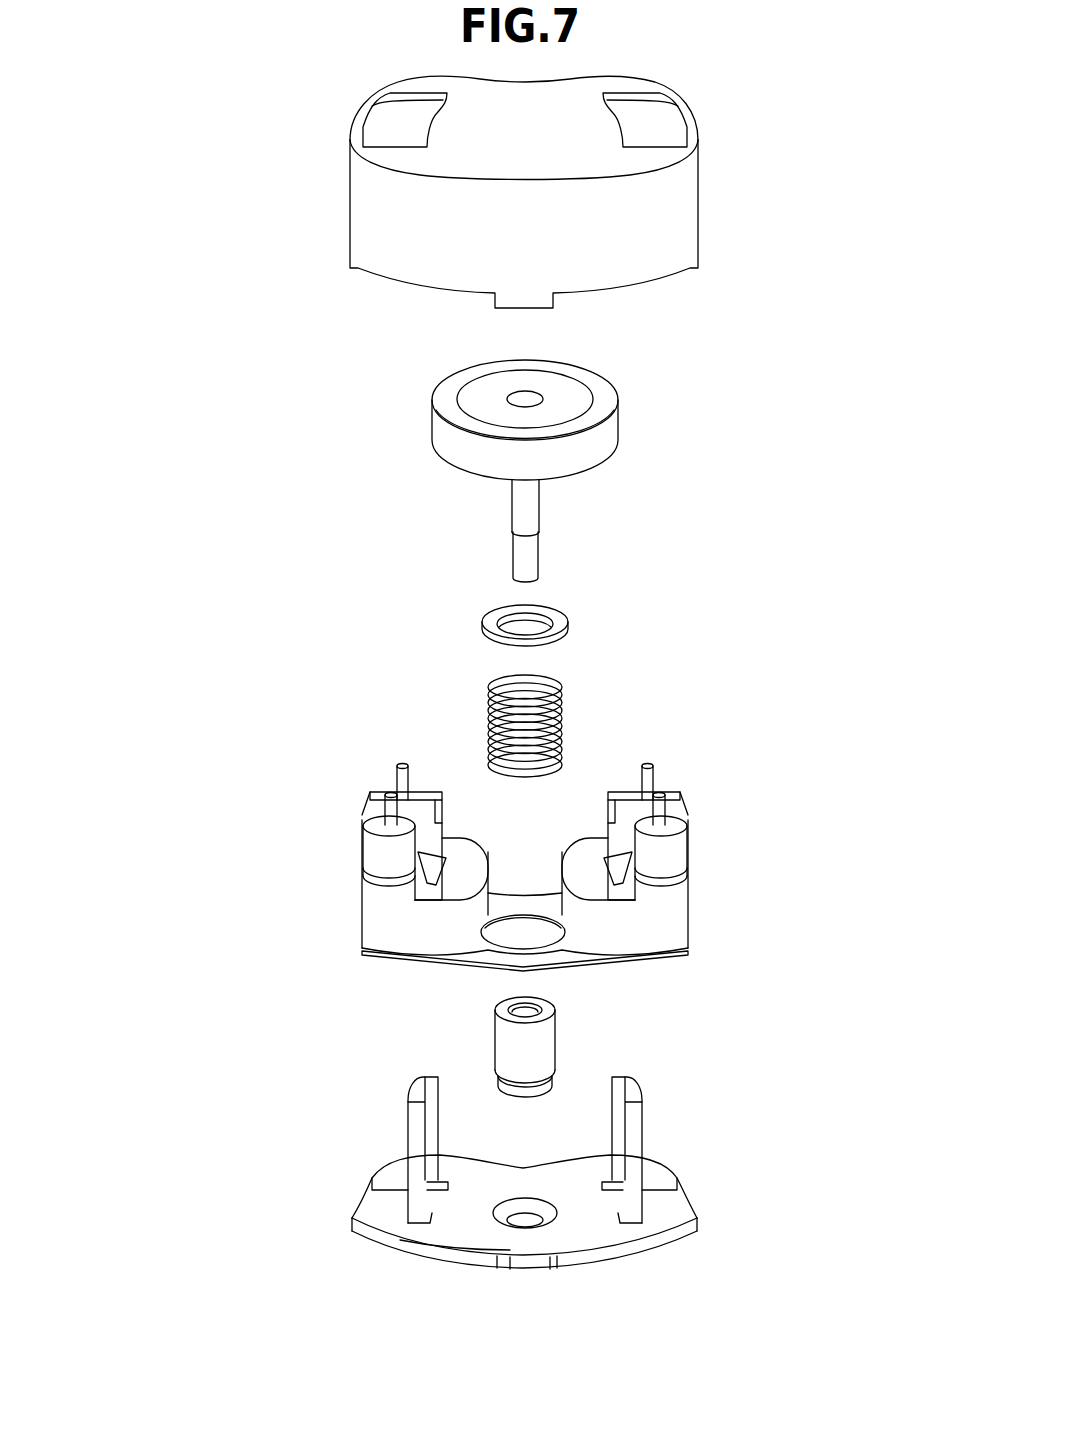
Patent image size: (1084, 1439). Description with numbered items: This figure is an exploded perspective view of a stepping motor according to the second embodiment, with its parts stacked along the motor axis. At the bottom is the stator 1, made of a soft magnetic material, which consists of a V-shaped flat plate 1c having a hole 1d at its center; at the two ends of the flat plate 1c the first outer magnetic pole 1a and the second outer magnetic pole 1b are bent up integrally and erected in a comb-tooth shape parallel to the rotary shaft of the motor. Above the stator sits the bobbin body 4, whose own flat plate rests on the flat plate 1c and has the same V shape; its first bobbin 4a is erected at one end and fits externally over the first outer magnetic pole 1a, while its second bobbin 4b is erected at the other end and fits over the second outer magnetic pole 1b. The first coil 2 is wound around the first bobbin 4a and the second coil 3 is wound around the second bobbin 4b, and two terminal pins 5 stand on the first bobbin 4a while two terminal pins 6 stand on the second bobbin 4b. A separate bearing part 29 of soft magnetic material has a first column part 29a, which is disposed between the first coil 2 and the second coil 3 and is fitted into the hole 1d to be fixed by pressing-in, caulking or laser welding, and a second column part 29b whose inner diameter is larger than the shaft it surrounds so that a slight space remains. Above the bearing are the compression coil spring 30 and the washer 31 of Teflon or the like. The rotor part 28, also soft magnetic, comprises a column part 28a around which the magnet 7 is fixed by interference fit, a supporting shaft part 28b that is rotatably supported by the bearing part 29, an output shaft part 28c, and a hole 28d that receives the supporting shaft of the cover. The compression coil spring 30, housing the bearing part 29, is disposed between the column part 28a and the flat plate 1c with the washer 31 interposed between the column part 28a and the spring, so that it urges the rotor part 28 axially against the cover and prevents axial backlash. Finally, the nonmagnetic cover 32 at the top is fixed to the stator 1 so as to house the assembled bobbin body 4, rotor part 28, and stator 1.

The stator 1 is at (521, 1215).
The first outer magnetic pole 1a is at (408, 1130).
The second outer magnetic pole 1b is at (640, 1122).
The flat plate 1c is at (468, 1243).
The hole 1d is at (525, 1223).
The first coil 2 is at (372, 918).
The second coil 3 is at (668, 922).
The bobbin body 4 is at (519, 899).
The first bobbin 4a is at (372, 848).
The second bobbin 4b is at (688, 845).
The terminal pins 5 is at (398, 772).
The terminal pins 6 is at (652, 773).
The magnet 7 is at (530, 391).
The rotor part 28 is at (522, 443).
The column part 28a is at (563, 388).
The supporting shaft part 28b is at (530, 507).
The output shaft part 28c is at (542, 550).
The hole 28d is at (512, 390).
The bearing part 29 is at (509, 1037).
The first column part 29a is at (503, 1078).
The second column part 29b is at (503, 1037).
The compression coil spring 30 is at (488, 728).
The washer 31 is at (480, 632).
The cover 32 is at (357, 192).